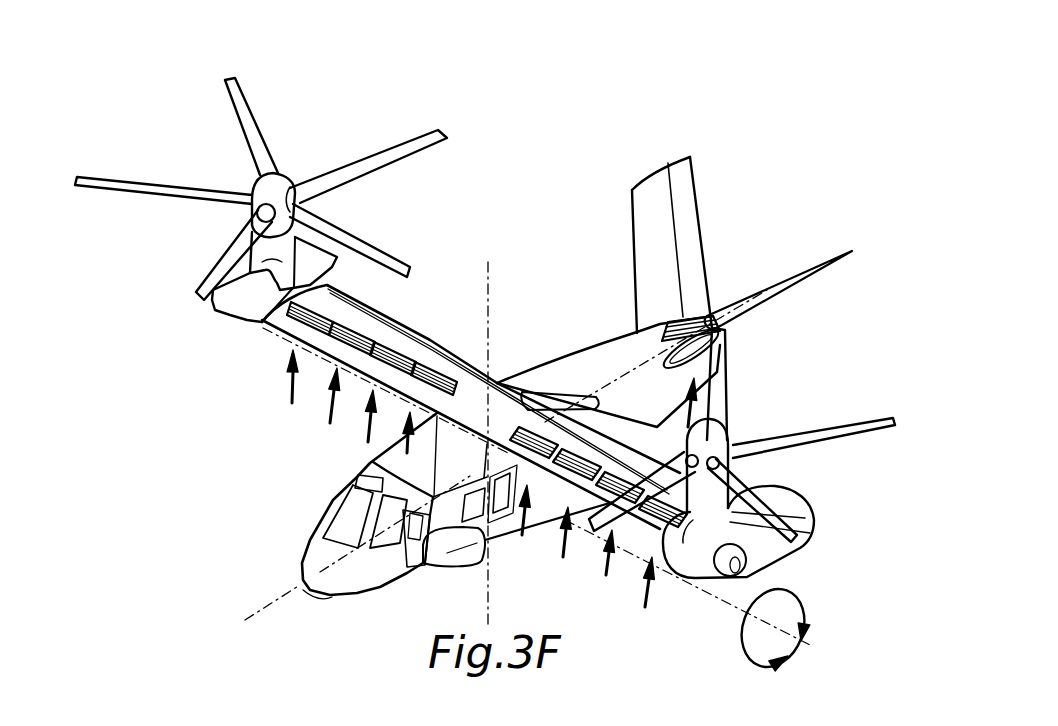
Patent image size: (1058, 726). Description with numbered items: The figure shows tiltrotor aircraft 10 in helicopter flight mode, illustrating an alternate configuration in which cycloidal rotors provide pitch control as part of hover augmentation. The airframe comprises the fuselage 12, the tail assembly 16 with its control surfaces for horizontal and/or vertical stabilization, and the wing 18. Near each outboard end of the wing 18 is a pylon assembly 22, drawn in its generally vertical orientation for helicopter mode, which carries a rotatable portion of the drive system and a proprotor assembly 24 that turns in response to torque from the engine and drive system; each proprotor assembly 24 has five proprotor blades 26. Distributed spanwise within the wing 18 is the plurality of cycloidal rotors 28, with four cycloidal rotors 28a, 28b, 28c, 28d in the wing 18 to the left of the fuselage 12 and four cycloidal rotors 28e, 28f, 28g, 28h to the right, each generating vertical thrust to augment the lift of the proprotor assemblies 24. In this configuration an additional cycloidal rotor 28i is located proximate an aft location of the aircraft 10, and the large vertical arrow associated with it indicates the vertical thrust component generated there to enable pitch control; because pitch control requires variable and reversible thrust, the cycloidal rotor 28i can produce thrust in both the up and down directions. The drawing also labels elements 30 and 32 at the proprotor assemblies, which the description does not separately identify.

The tiltrotor aircraft 10 is at (527, 285).
The fuselage 12 is at (603, 360).
The tail assembly 16 is at (697, 242).
The wing 18 is at (353, 357).
The pylon assembly 22 is at (793, 507).
The proprotor assembly 24 is at (320, 260).
The proprotor blades 26 is at (693, 513).
The cycloidal rotor 28 is at (272, 262).
The cycloidal rotor 28a is at (652, 514).
The cycloidal rotor 28b is at (620, 494).
The cycloidal rotor 28c is at (571, 463).
The cycloidal rotor 28d is at (535, 440).
The cycloidal rotor 28e is at (446, 372).
The cycloidal rotor 28f is at (404, 346).
The cycloidal rotor 28g is at (362, 322).
The cycloidal rotor 28h is at (318, 296).
The cycloidal rotor 28i is at (686, 324).
The rotor hub 30 is at (277, 182).
The rotor blade 32 is at (246, 92).